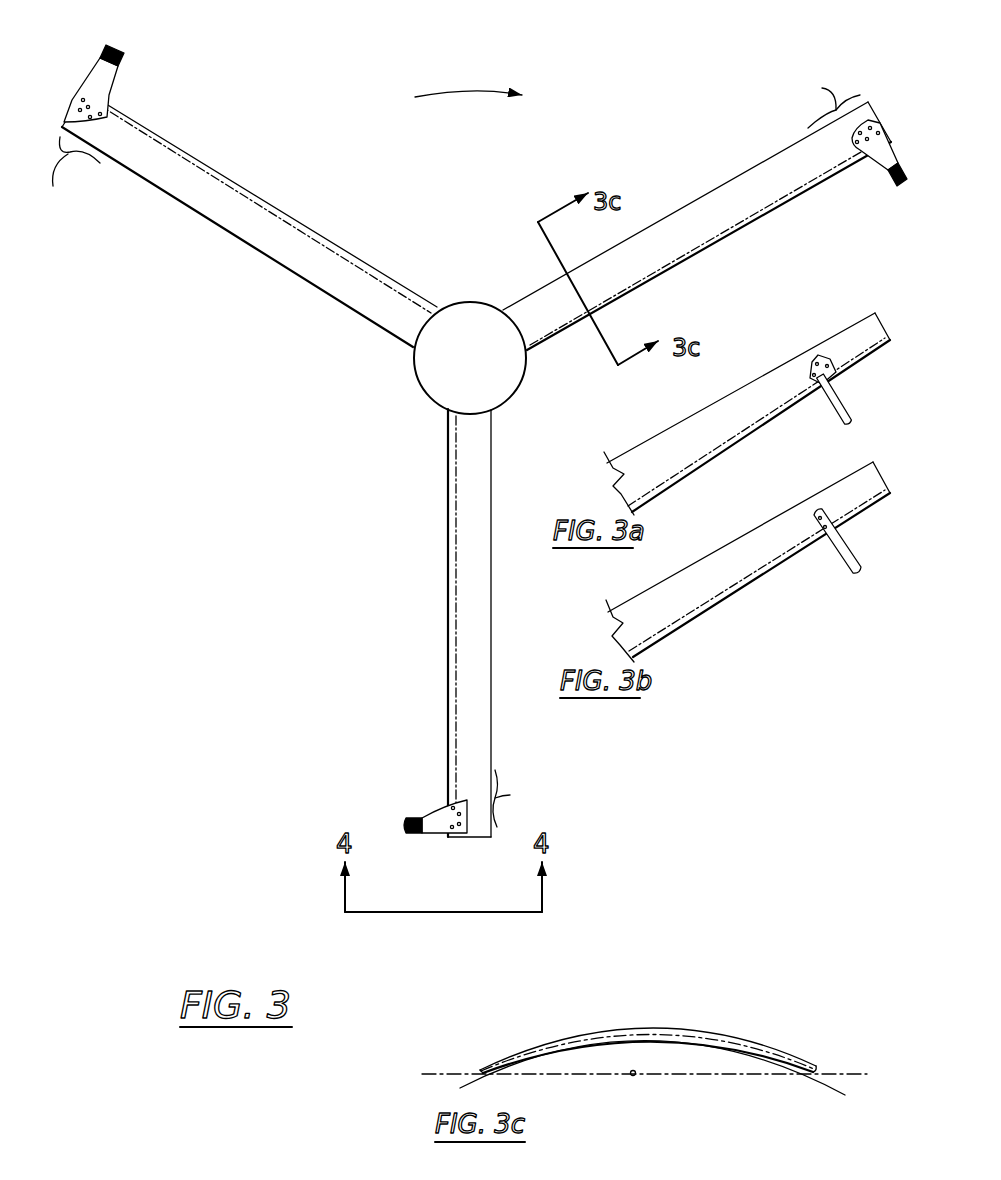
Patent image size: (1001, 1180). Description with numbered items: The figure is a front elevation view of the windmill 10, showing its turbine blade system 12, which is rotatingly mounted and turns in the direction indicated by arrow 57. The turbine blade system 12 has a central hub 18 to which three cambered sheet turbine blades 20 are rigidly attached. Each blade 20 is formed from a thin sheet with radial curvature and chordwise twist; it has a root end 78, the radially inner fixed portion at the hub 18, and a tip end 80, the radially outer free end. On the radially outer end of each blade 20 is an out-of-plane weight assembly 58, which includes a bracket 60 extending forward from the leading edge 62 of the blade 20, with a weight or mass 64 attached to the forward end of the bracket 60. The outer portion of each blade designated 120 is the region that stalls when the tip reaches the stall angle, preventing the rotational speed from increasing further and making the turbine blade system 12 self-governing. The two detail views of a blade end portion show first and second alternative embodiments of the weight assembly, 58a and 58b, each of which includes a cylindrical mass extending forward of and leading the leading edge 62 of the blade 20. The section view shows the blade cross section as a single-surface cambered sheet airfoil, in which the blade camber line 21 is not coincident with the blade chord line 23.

In FIG. 3, the windmill 10 is at (603, 48).
In FIG. 3, the turbine blade system 12 is at (509, 399).
In FIG. 3, the central hub 18 is at (478, 373).
In FIG. 3, the cambered sheet turbine blade 20 is at (248, 218).
In FIG. 3c, the blade camber line 21 is at (641, 1038).
In FIG. 3c, the blade chord line 23 is at (634, 1076).
In FIG. 3, the arrow indicating direction of rotation 57 is at (440, 94).
In FIG. 3, the out-of-plane weight assembly 58 is at (110, 90).
In FIG. 3a, the first alternative weight assembly 58a is at (853, 404).
In FIG. 3b, the second alternative weight assembly 58b is at (861, 558).
In FIG. 3, the bracket 60 is at (92, 82).
In FIG. 3, the leading edge 62 is at (190, 162).
In FIG. 3, the weight or mass 64 is at (103, 59).
In FIG. 3, the root end 78 is at (412, 352).
In FIG. 3, the tip end 80 is at (64, 109).
In FIG. 3, the stalling outer blade portion 120 is at (456, 452).